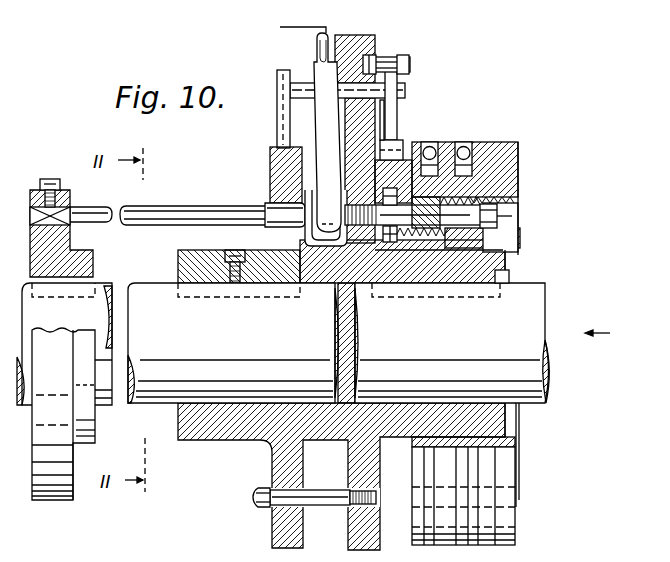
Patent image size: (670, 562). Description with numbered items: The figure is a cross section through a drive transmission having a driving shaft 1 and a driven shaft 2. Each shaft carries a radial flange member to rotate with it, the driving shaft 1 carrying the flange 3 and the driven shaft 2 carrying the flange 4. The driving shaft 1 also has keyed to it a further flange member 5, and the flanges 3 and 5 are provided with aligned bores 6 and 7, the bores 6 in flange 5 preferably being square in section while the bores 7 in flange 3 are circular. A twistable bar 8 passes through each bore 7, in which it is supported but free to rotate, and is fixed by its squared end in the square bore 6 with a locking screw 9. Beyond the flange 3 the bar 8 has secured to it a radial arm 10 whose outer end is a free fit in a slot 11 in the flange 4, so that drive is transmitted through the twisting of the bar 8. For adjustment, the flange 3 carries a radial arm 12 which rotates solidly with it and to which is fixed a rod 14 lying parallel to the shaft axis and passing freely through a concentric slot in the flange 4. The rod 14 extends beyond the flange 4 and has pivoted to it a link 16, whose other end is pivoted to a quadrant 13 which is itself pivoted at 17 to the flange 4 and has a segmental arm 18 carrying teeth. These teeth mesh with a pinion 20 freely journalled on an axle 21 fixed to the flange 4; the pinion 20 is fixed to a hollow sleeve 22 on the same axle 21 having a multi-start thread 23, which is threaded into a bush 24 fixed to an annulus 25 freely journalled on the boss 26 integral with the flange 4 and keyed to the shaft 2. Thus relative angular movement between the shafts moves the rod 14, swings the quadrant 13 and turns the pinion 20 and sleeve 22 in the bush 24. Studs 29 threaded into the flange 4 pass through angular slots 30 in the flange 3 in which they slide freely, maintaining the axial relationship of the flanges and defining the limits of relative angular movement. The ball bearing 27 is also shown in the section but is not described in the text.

The driving shaft 1 is at (148, 390).
The driven shaft 2 is at (514, 400).
The radial flange member 3 is at (270, 168).
The radial flange member 4 is at (372, 532).
The flange member 5 is at (53, 500).
The bore 6 is at (57, 223).
The bore 7 is at (270, 200).
The twistable bar 8 is at (172, 210).
The locking screw 9 is at (47, 179).
The radial arm 10 is at (318, 147).
The slot 11 is at (291, 28).
The radial arm 12 is at (278, 82).
The quadrant 13 is at (392, 140).
The rod 14 is at (298, 83).
The link 16 is at (395, 122).
The pivot 17 is at (384, 64).
The segmental arm 18 is at (474, 210).
The pinion 20 is at (391, 245).
The axle 21 is at (378, 212).
The hollow sleeve 22 is at (510, 160).
The multi-start thread 23 is at (470, 195).
The bush 24 is at (427, 240).
The annulus 25 is at (516, 186).
The boss 26 is at (493, 262).
The ball bearing 27 is at (447, 145).
The stud 29 is at (325, 506).
The angular slot 30 is at (294, 488).